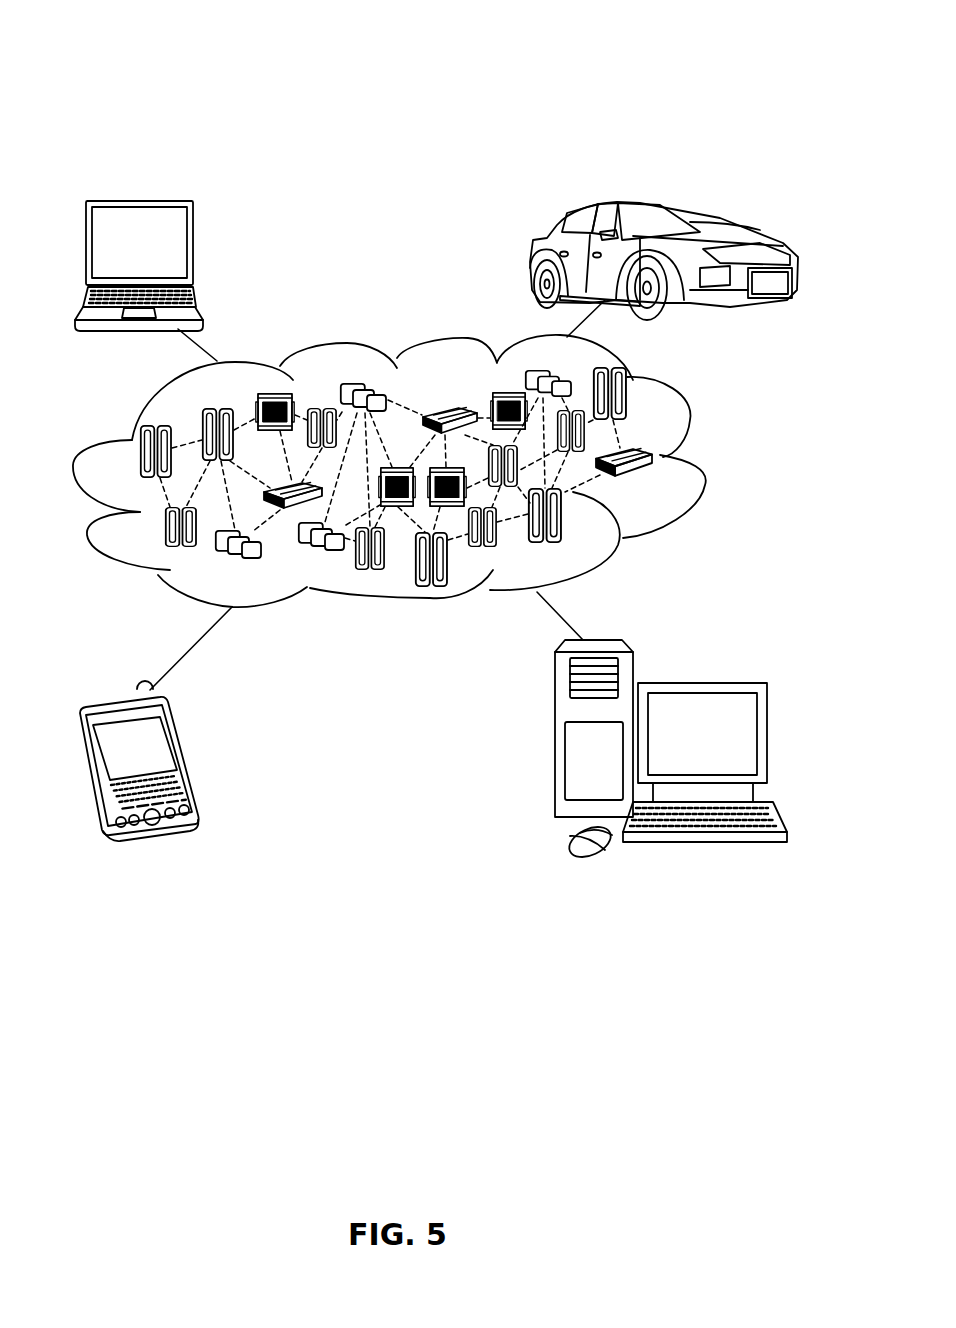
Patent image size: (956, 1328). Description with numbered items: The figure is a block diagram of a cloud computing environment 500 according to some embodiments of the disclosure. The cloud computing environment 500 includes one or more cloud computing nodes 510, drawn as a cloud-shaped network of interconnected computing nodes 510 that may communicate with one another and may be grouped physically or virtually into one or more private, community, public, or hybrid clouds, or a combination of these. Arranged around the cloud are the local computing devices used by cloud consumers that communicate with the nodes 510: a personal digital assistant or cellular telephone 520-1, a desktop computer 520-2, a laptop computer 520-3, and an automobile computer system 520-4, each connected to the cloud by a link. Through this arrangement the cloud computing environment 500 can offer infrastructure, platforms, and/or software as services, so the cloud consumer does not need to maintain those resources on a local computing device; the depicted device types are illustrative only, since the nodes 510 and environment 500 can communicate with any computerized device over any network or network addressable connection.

The cloud computing environment 500 is at (322, 58).
The cloud computing nodes 510 is at (670, 488).
The personal digital assistant (PDA) or cellular telephone 520-1 is at (183, 760).
The desktop computer 520-2 is at (700, 682).
The laptop computer 520-3 is at (193, 250).
The automobile computer system 520-4 is at (530, 262).